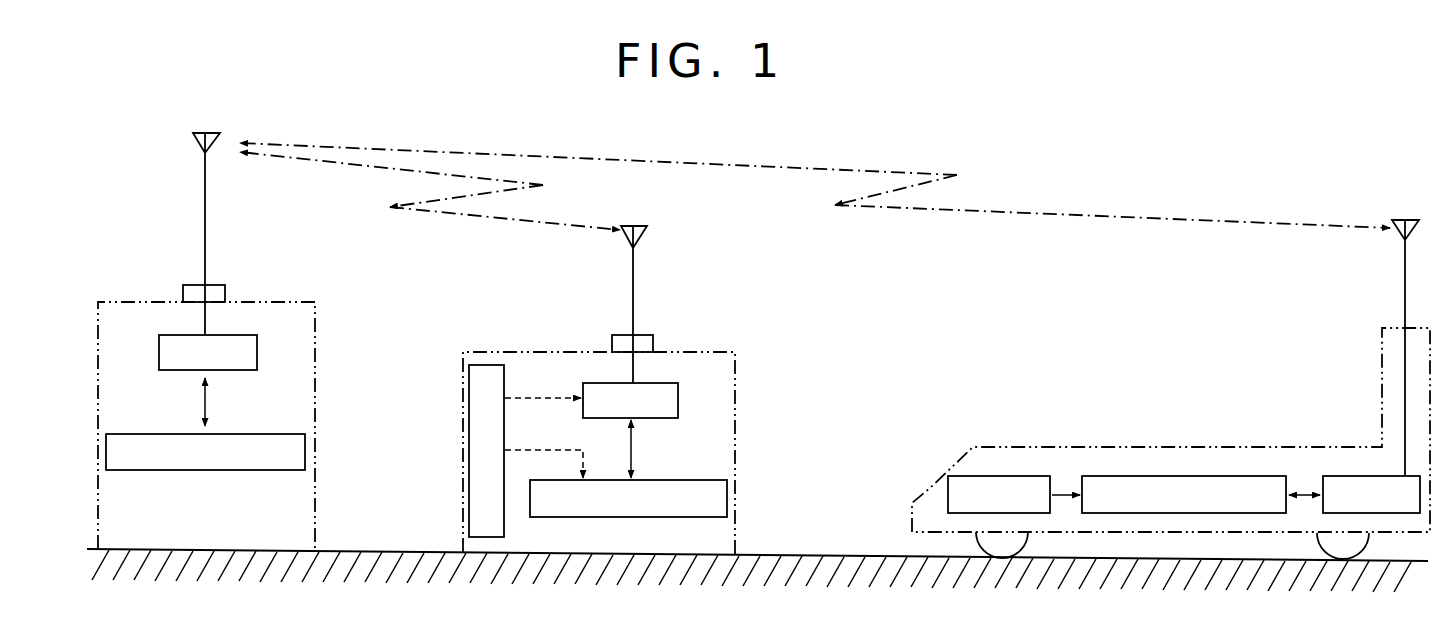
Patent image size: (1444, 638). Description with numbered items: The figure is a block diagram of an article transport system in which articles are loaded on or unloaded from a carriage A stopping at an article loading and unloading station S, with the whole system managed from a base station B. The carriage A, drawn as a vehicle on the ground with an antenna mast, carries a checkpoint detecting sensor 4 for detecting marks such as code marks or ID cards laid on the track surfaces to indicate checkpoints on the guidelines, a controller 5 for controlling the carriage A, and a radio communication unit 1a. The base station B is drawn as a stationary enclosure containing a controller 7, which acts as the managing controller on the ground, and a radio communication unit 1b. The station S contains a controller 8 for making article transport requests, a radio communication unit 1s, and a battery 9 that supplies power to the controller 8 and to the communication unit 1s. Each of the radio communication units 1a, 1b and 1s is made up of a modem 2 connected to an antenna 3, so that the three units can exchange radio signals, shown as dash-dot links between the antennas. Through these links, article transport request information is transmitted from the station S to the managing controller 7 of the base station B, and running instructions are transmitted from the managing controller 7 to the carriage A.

The radio communication unit 1a is at (1164, 401).
The radio communication unit 1b is at (256, 332).
The radio communication unit 1s is at (647, 384).
The carriage A is at (953, 463).
The base station B is at (317, 322).
The article loading and unloading station S is at (567, 350).
The modem 2 is at (237, 333).
The antenna 3 is at (215, 132).
The checkpoint detecting sensor 4 is at (998, 475).
The controller 5 is at (1170, 475).
The controller 7 is at (267, 433).
The controller 8 is at (703, 480).
The battery 9 is at (469, 455).